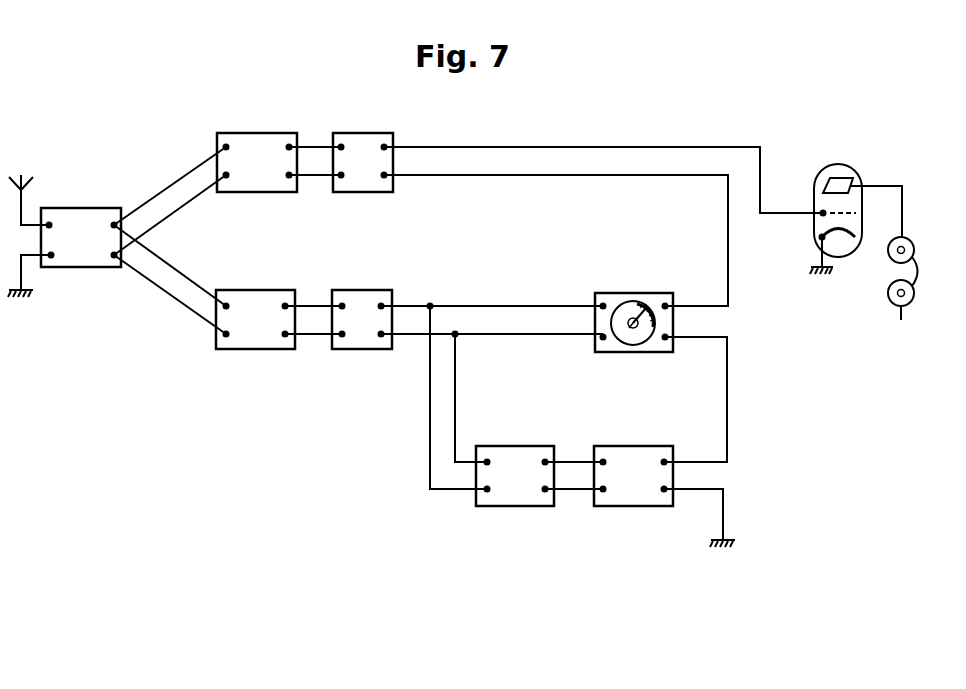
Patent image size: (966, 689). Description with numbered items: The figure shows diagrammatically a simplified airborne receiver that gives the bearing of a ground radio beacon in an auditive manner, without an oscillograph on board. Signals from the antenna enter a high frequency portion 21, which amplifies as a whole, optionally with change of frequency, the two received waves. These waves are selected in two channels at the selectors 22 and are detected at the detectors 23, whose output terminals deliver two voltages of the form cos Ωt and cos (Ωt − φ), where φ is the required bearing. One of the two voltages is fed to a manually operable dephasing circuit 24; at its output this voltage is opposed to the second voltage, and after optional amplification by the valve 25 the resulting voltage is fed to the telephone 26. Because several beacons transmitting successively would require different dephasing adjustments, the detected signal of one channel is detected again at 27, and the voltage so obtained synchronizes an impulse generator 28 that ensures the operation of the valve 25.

The high frequency portion 21 is at (81, 237).
The wave selector 22 is at (256, 241).
The detector 23 is at (362, 241).
The manually operable dephasing circuit 24 is at (634, 307).
The valve 25 is at (856, 208).
The telephone 26 is at (914, 278).
The second detector 27 is at (515, 476).
The impulse generator 28 is at (633, 476).